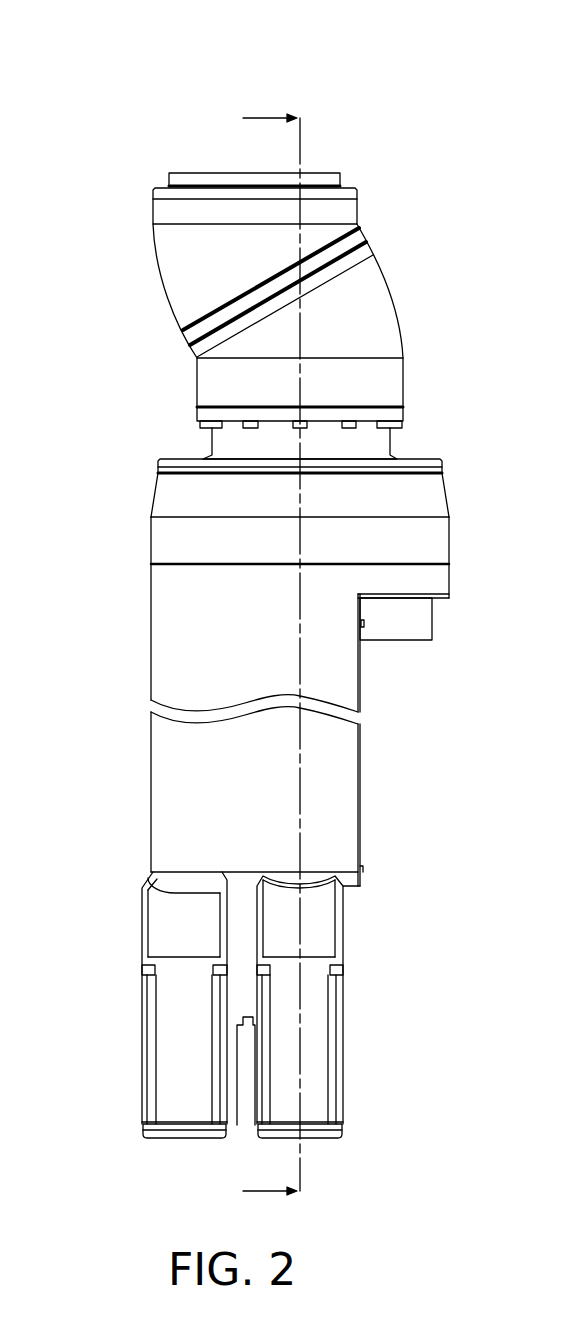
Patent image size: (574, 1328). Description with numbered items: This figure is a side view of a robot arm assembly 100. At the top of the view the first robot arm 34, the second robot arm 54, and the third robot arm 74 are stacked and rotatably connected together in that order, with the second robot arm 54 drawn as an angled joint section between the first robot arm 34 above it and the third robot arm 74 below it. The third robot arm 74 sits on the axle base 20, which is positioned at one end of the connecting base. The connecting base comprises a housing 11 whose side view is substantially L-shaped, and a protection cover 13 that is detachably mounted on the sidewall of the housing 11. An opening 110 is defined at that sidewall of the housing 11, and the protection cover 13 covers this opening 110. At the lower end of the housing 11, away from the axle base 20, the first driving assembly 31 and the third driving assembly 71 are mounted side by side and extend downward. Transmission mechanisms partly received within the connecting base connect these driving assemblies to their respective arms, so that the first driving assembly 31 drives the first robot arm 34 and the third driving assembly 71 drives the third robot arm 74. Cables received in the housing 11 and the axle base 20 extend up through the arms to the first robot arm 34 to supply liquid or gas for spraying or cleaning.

The robot arm assembly 100 is at (295, 43).
The first robot arm 34 is at (187, 178).
The second robot arm 54 is at (177, 257).
The third robot arm 74 is at (217, 390).
The axle base 20 is at (180, 502).
The housing 11 is at (188, 637).
The protection cover 13 is at (360, 672).
The opening 110 is at (358, 772).
The third driving assembly 71 is at (173, 1020).
The first driving assembly 31 is at (305, 1025).